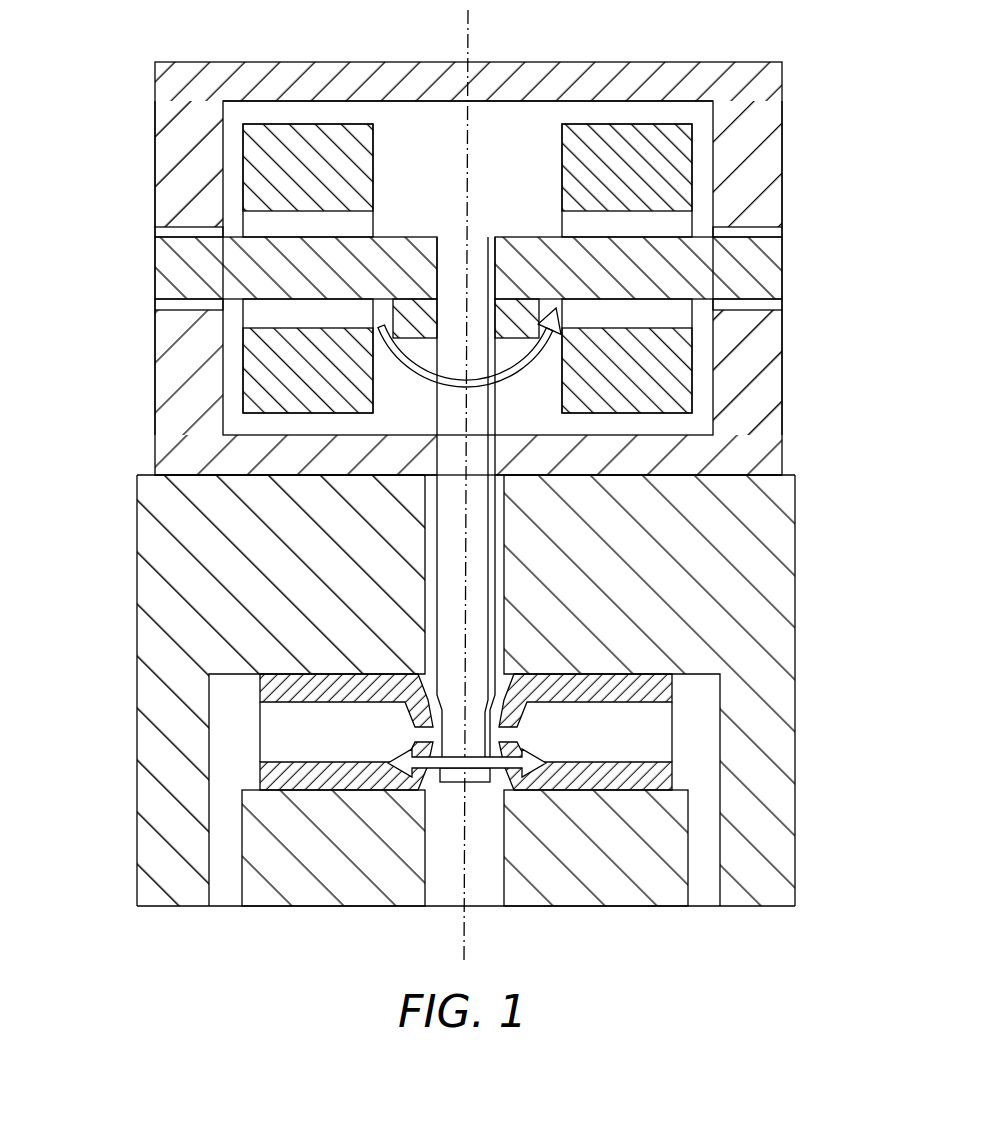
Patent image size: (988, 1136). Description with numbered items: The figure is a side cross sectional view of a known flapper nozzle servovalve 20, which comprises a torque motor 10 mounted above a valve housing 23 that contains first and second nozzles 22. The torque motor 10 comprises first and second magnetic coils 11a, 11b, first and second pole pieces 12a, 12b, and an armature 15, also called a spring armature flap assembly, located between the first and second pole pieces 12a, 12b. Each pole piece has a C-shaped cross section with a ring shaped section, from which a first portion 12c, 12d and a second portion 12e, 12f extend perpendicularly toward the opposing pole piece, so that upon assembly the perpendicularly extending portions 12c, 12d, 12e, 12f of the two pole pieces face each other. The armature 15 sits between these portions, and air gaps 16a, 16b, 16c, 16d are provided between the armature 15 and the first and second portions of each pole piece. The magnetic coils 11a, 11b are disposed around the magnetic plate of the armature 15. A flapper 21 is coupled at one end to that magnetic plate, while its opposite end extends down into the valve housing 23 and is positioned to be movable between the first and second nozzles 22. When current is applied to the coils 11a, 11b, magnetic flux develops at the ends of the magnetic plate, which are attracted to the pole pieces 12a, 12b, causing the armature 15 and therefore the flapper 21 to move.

The torque motor 10 is at (868, 62).
The first magnetic coil 11a is at (633, 130).
The second magnetic coil 11b is at (312, 130).
The first pole piece 12a is at (160, 81).
The second pole piece 12b is at (160, 452).
The first portion of first pole piece 12c is at (160, 186).
The first portion of second pole piece 12d is at (160, 348).
The second portion of first pole piece 12e is at (776, 166).
The second portion of second pole piece 12f is at (776, 368).
The armature 15 is at (160, 270).
The air gap 16a is at (160, 232).
The air gap 16b is at (160, 305).
The air gap 16c is at (774, 233).
The air gap 16d is at (774, 306).
The servovalve 20 is at (66, 62).
The flapper 21 is at (447, 541).
The nozzles 22 is at (653, 733).
The valve housing 23 is at (790, 492).